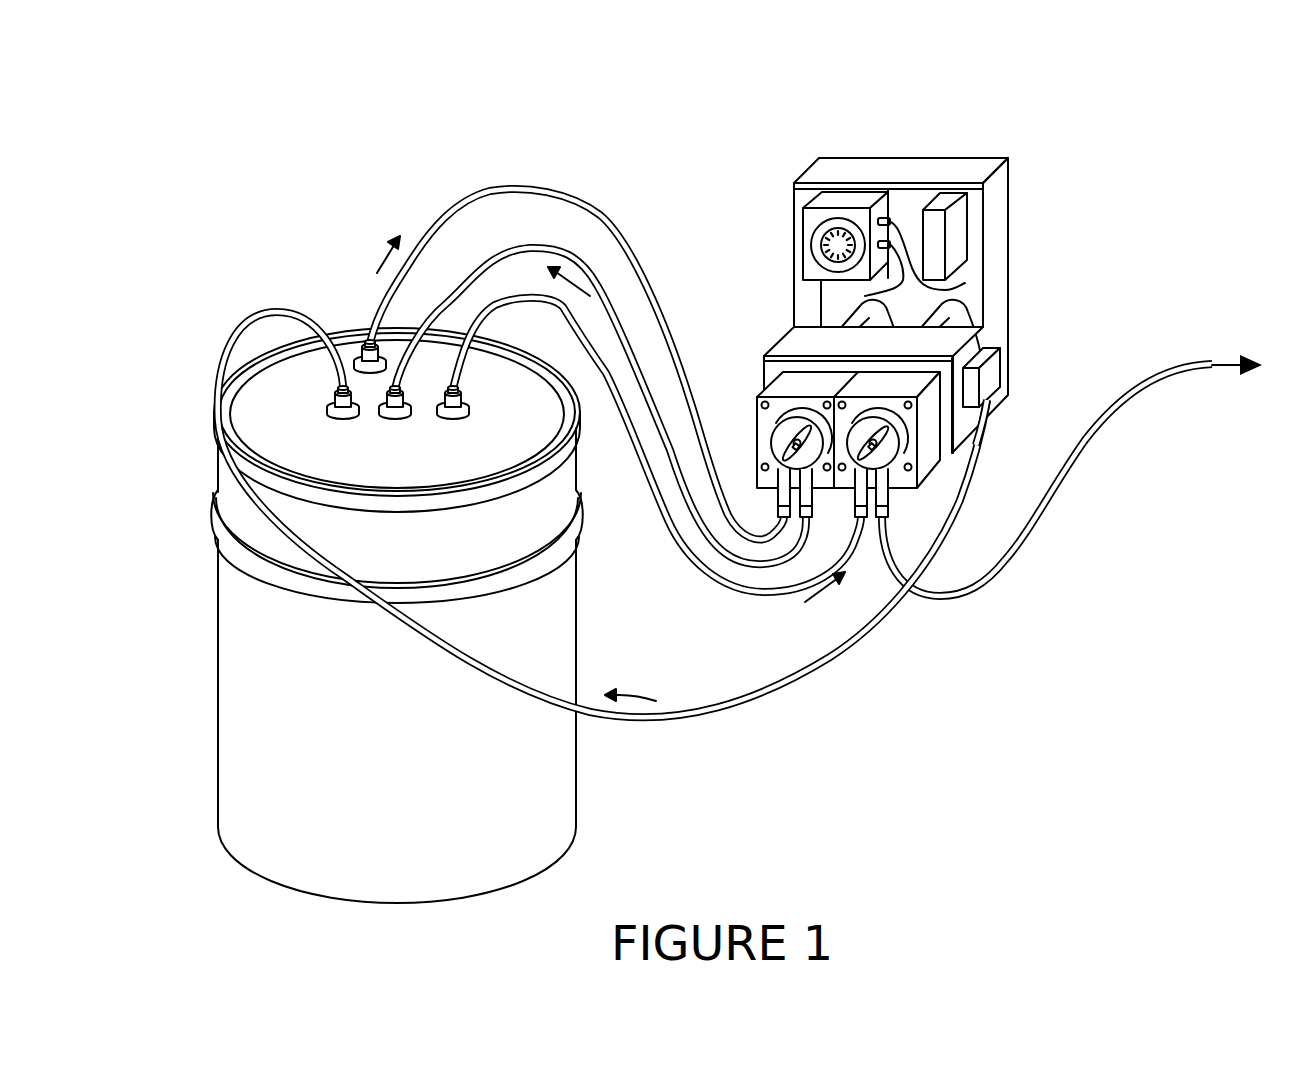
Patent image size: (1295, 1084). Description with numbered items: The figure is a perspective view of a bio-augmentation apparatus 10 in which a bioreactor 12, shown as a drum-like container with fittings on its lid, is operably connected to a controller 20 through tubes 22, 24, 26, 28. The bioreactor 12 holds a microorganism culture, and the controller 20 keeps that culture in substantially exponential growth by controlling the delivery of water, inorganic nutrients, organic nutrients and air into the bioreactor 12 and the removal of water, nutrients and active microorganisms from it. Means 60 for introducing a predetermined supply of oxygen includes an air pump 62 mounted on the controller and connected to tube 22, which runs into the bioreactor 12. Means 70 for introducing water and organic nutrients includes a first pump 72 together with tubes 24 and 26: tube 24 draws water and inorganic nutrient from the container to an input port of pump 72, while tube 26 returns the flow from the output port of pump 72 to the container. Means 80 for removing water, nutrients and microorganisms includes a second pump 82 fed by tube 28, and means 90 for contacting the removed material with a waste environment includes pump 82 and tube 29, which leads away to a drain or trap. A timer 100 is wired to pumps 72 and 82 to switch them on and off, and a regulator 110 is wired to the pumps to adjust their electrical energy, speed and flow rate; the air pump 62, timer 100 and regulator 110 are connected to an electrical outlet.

The bio-augmentation apparatus 10 is at (662, 153).
The bioreactor 12 is at (204, 684).
The controller 20 is at (897, 336).
The tube 22 is at (853, 652).
The tube 24 is at (452, 200).
The tube 26 is at (523, 244).
The tube 28 is at (740, 598).
The tube 29 is at (1106, 448).
The means for introducing a predetermined supply of oxygen 60 is at (997, 428).
The air pump 62 is at (1001, 360).
The means for introducing a predetermined supply of water 70 is at (748, 384).
The first pump 72 is at (757, 445).
The means for removing water, inorganic nutrients, organic nutrients, and microorgan 80 is at (685, 604).
The second pump 82 is at (930, 480).
The means for contacting the removed contents with an environment containing wastes 90 is at (1072, 521).
The timer 100 is at (803, 245).
The regulator 110 is at (967, 238).